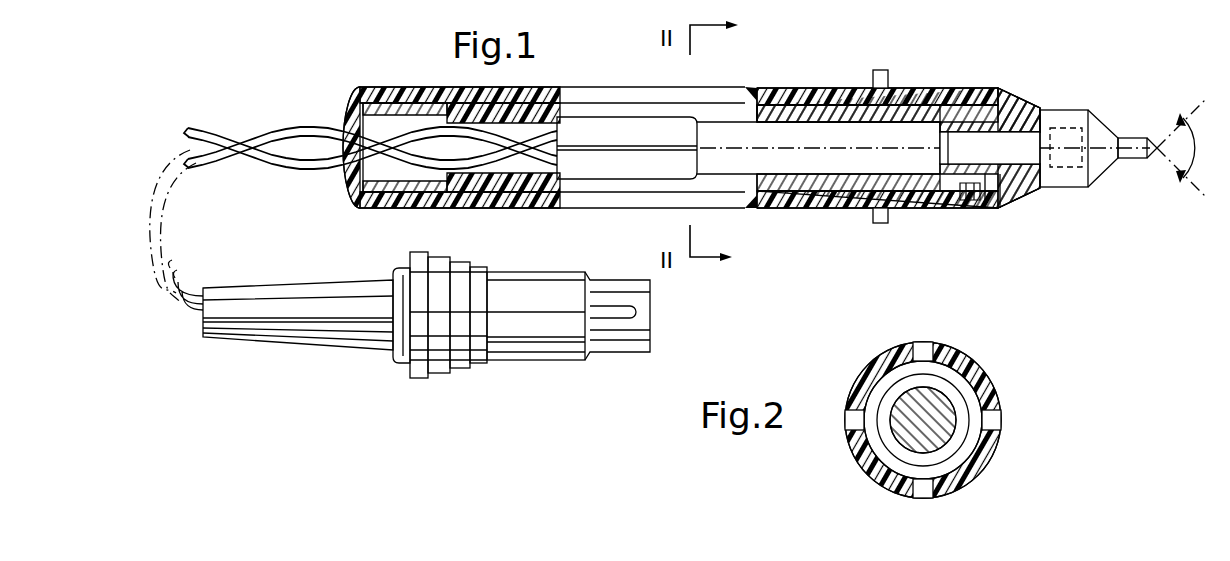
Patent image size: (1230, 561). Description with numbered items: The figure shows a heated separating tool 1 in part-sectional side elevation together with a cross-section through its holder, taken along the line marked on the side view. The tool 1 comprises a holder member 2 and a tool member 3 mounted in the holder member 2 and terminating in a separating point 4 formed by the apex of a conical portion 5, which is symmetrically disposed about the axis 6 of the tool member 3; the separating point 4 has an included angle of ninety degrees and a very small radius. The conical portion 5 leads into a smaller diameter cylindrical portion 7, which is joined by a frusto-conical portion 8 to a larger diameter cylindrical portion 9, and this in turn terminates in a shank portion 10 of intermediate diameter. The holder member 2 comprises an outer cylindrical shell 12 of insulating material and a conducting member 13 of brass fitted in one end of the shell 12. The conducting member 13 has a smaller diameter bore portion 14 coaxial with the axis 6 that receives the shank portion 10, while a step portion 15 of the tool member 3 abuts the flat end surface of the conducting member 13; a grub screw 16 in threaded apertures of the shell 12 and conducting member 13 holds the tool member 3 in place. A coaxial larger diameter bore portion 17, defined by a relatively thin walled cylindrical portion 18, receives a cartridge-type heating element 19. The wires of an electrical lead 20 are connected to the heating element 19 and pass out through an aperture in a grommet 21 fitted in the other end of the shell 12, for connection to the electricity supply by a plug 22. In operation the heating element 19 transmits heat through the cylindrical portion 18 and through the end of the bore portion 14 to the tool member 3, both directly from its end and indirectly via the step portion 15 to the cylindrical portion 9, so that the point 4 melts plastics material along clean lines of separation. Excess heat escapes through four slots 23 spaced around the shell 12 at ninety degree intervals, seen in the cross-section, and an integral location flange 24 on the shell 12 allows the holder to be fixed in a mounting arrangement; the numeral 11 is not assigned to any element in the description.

In FIG. 1, the separating tool 1 is at (752, 70).
In FIG. 1, the holder member 2 is at (942, 78).
In FIG. 1, the tool member 3 is at (1135, 170).
In FIG. 1, the separating point 4 is at (1160, 152).
In FIG. 1, the conical portion 5 is at (1151, 136).
In FIG. 1, the axis 6 is at (925, 200).
In FIG. 1, the smaller diameter cylindrical portion 7 is at (1124, 136).
In FIG. 1, the frusto-conical portion 8 is at (1104, 152).
In FIG. 1, the larger diameter cylindrical portion 9 is at (1080, 108).
In FIG. 1, the shank portion 10 is at (1031, 198).
In FIG. 1, the nut bore 11 is at (1076, 170).
In FIG. 1, the outer cylindrical shell 12 is at (497, 200).
In FIG. 2, the outer cylindrical shell 12 is at (860, 382).
In FIG. 1, the conducting member 13 is at (1020, 106).
In FIG. 1, the smaller diameter bore portion 14 is at (1002, 198).
In FIG. 1, the step portion 15 is at (1066, 109).
In FIG. 1, the grub screw 16 is at (968, 198).
In FIG. 1, the larger diameter bore portion 17 is at (808, 176).
In FIG. 1, the thin walled cylindrical portion 18 is at (805, 115).
In FIG. 2, the thin walled cylindrical portion 18 is at (952, 394).
In FIG. 1, the heating element 19 is at (863, 140).
In FIG. 2, the heating element 19 is at (945, 438).
In FIG. 1, the electrical lead 20 is at (258, 172).
In FIG. 1, the grommet 21 is at (357, 190).
In FIG. 1, the plug 22 is at (547, 345).
In FIG. 2, the slots 23 is at (920, 346).
In FIG. 1, the location flange 24 is at (883, 84).